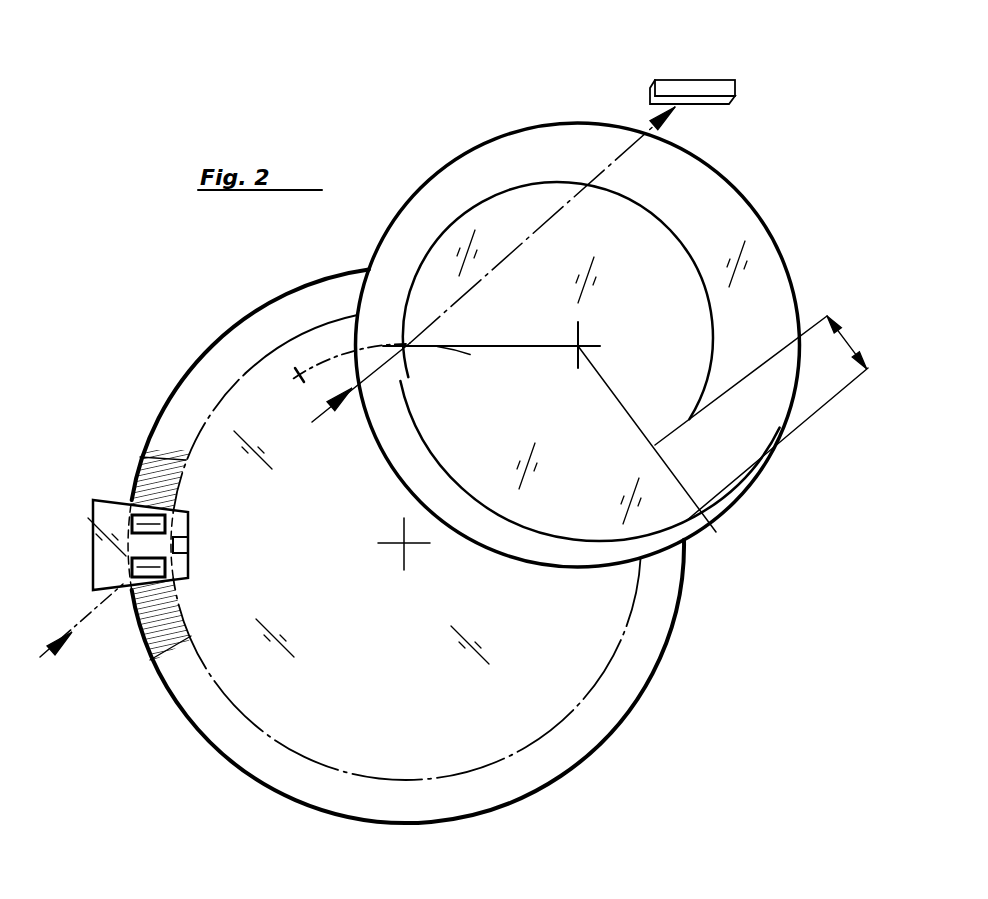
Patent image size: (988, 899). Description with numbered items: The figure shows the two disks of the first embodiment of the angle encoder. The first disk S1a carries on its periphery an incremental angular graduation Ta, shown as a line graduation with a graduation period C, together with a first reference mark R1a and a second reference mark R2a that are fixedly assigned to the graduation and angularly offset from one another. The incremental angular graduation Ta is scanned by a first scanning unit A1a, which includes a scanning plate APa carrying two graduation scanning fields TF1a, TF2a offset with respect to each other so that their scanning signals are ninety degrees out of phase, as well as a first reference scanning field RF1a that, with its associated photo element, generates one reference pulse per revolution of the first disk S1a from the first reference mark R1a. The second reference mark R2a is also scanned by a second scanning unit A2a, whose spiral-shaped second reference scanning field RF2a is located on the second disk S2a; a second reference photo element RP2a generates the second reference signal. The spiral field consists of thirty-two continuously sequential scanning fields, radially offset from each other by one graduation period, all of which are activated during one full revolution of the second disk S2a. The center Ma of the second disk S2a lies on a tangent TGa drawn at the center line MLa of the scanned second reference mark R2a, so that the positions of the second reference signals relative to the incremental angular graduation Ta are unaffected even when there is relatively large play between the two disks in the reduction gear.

The first disk S1a is at (363, 808).
The second disk S2a is at (506, 136).
The first reference mark R1a is at (188, 628).
The second reference mark R2a is at (297, 378).
The incremental angular graduation Ta is at (147, 456).
The scanning plate APa is at (100, 573).
The first graduation scanning field TF1a is at (130, 523).
The second graduation scanning field TF2a is at (130, 568).
The first reference scanning field RF1a is at (182, 542).
The second reference scanning field RF2a is at (665, 228).
The first scanning unit A1a is at (79, 643).
The second scanning unit A2a is at (486, 281).
The center line MLa is at (449, 353).
The tangent TGa is at (503, 346).
The center Ma is at (586, 346).
The second reference photo element RP2a is at (688, 88).